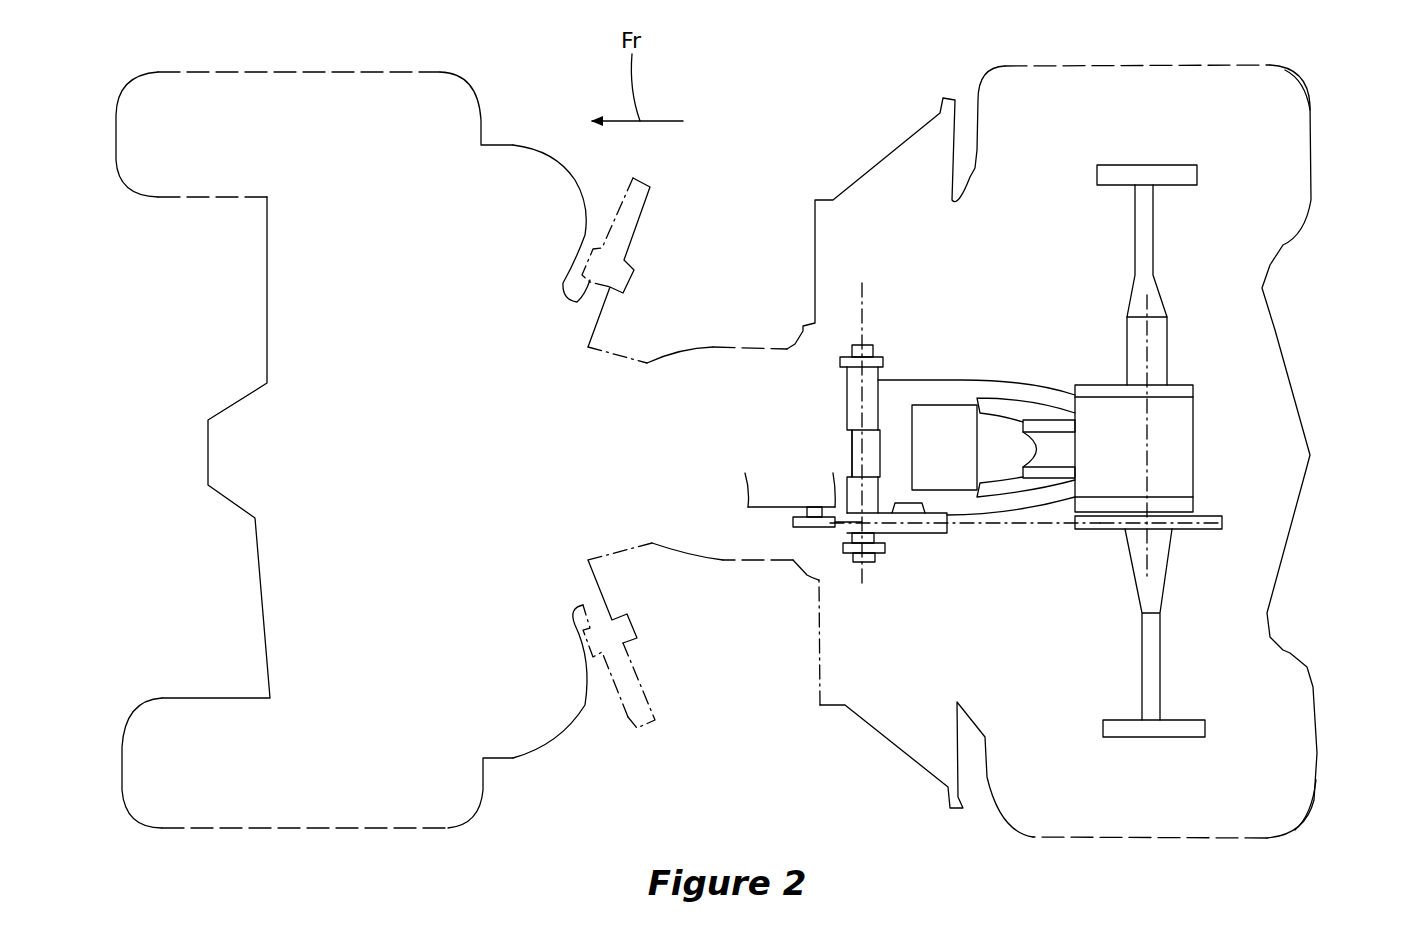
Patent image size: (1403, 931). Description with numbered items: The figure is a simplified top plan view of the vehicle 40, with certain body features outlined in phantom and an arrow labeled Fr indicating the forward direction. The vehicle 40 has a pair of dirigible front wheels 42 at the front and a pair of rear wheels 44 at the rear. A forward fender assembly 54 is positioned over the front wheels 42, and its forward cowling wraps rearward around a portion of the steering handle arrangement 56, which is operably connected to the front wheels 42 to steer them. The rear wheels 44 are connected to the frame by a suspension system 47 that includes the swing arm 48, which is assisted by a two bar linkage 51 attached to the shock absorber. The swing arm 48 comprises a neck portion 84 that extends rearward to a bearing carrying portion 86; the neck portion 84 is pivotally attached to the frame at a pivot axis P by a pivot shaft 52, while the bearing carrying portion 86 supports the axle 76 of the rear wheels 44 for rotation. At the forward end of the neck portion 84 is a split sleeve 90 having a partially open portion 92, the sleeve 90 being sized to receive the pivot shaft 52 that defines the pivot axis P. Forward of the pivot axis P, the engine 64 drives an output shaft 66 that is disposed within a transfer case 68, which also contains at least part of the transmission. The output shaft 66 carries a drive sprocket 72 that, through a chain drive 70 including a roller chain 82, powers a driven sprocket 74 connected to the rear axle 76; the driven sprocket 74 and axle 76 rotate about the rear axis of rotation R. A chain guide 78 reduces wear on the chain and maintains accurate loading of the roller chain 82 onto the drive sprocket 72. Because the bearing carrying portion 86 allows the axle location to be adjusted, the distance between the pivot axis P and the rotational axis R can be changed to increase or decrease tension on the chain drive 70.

The vehicle 40 is at (1273, 320).
The front wheels 42 is at (158, 200).
The rear wheels 44 is at (1310, 143).
The suspension system 47 is at (927, 292).
The swing arm 48 is at (998, 378).
The two bar linkage 51 is at (1050, 420).
The pivot shaft 52 is at (847, 388).
The forward fender assembly 54 is at (257, 365).
The steering handle arrangement 56 is at (628, 717).
The engine 64 is at (760, 512).
The output shaft 66 is at (813, 507).
The transfer case 68 is at (781, 522).
The chain drive 70 is at (1058, 530).
The drive sprocket 72 is at (807, 527).
The driven sprocket 74 is at (1213, 530).
The axle 76 is at (1135, 245).
The chain guide 78 is at (912, 535).
The roller chain 82 is at (992, 527).
The neck portion 84 is at (935, 397).
The bearing carrying portion 86 is at (1195, 445).
The split sleeve 90 is at (878, 352).
The partially open portion 92 is at (842, 448).
The pivot axis P is at (858, 300).
The rear axis of rotation R is at (1147, 345).